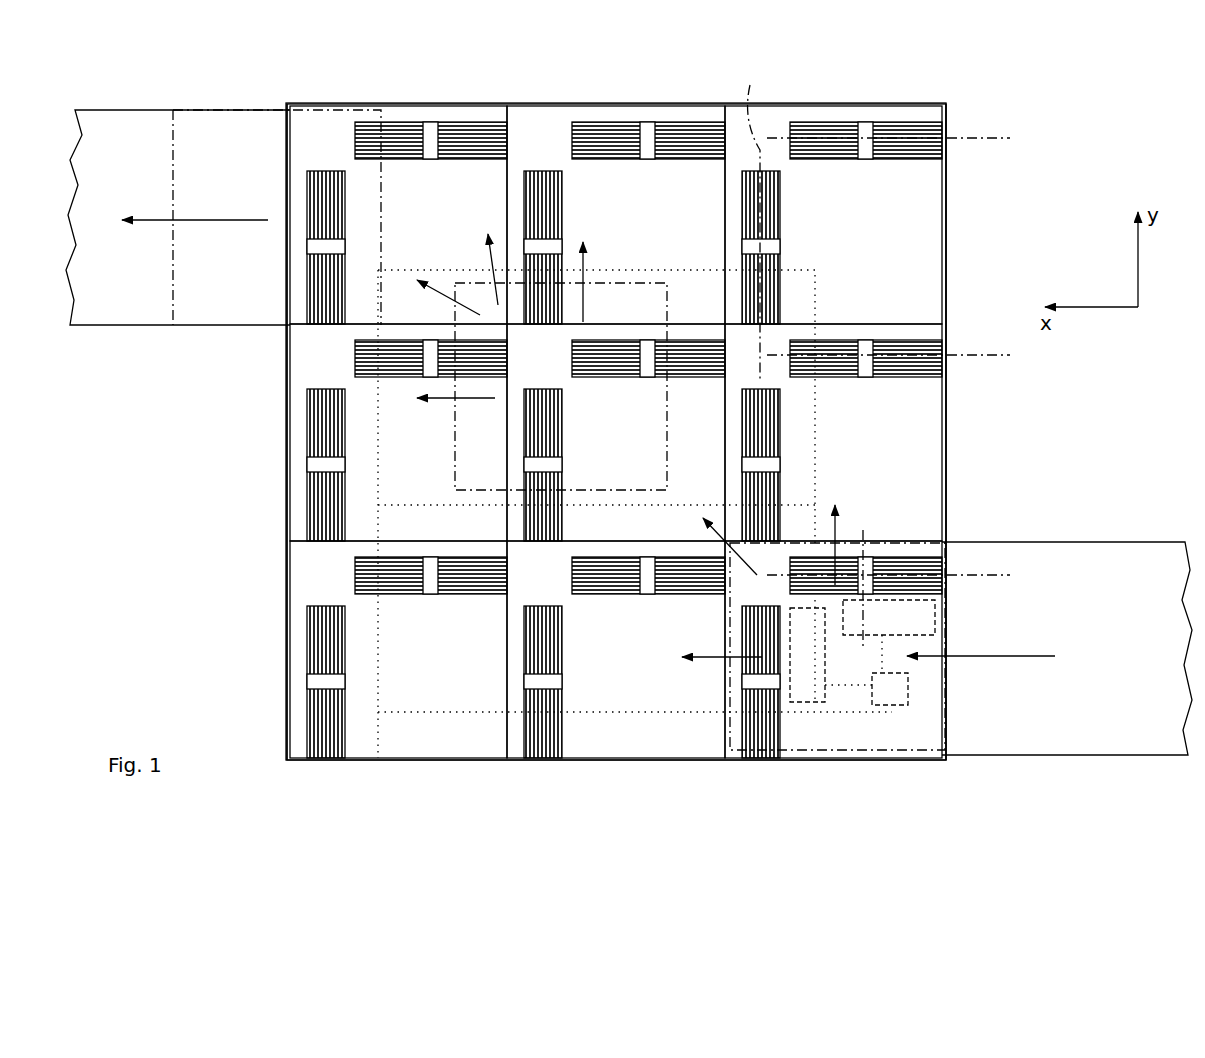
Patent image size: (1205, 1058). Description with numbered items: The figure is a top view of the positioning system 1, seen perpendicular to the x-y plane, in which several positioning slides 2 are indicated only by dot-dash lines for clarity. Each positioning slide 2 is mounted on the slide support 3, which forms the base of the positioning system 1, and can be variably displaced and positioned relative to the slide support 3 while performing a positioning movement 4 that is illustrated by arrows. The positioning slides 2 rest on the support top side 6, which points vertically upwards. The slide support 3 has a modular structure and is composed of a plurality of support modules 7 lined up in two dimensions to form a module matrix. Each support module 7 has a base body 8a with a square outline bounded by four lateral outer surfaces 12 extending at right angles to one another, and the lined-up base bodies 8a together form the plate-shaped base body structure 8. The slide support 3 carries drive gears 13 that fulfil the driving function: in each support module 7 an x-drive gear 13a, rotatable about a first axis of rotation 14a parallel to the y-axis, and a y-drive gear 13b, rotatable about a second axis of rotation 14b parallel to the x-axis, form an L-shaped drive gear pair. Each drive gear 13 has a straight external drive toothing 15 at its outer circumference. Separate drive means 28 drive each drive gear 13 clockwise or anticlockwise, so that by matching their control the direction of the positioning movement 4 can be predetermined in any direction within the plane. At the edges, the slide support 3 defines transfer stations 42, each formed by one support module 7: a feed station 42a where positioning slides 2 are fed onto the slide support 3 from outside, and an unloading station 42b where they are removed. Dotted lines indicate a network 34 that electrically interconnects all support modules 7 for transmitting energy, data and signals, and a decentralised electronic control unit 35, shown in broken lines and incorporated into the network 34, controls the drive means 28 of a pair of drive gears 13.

The positioning system 1 is at (1003, 108).
The positioning slide 2 is at (232, 108).
The slide support 3 is at (287, 568).
The positioning movement 4 is at (160, 225).
The support top side 6 is at (519, 128).
The support module 7 is at (322, 133).
The base body structure 8 is at (300, 499).
The base body 8a is at (932, 200).
The lateral outer surface 12 is at (363, 540).
The drive gear 13 is at (565, 400).
The x-drive gear 13a is at (306, 226).
The y-drive gear 13b is at (462, 120).
The first axis of rotation 14a is at (715, 800).
The second axis of rotation 14b is at (911, 361).
The drive toothing 15 is at (840, 340).
The drive means 28 is at (945, 618).
The network 34 is at (378, 742).
The decentralised electronic control unit 35 is at (910, 688).
The transfer station 42 is at (629, 458).
The feed station 42a is at (950, 722).
The unloading station 42b is at (287, 292).